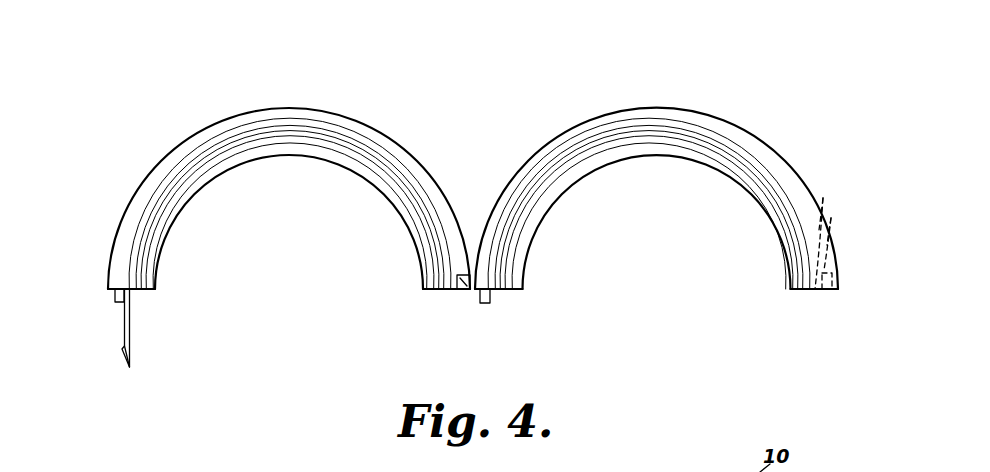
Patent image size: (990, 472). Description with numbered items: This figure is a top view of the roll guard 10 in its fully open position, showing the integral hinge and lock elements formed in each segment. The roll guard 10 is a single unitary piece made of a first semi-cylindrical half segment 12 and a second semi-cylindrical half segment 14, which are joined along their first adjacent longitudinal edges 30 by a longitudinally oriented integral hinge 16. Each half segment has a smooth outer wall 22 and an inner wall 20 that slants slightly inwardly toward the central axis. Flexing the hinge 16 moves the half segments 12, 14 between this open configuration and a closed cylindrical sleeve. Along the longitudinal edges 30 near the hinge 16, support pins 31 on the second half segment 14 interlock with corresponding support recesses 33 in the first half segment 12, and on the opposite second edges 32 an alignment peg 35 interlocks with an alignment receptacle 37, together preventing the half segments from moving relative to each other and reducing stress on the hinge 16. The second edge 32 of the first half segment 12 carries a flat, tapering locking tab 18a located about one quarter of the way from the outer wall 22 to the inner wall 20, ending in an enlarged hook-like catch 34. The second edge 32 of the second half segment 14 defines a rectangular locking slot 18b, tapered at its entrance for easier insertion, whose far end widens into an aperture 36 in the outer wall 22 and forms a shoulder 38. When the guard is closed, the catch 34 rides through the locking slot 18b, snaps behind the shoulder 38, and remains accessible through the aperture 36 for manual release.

The roll guard 10 is at (880, 146).
The first semi-cylindrical half segment 12 is at (190, 137).
The second semi-cylindrical half segment 14 is at (783, 157).
The integral hinge 16 is at (467, 290).
The locking tab 18a is at (127, 345).
The locking slot 18b is at (826, 266).
The inner wall 20 is at (300, 156).
The outer wall 22 is at (690, 107).
The longitudinal edge 30 is at (432, 290).
The support pin 31 is at (487, 304).
The second edge 32 is at (140, 290).
The support recess 33 is at (462, 284).
The catch 34 is at (127, 360).
The alignment peg 35 is at (117, 300).
The aperture 36 is at (823, 205).
The alignment receptacle 37 is at (829, 293).
The shoulder 38 is at (832, 220).